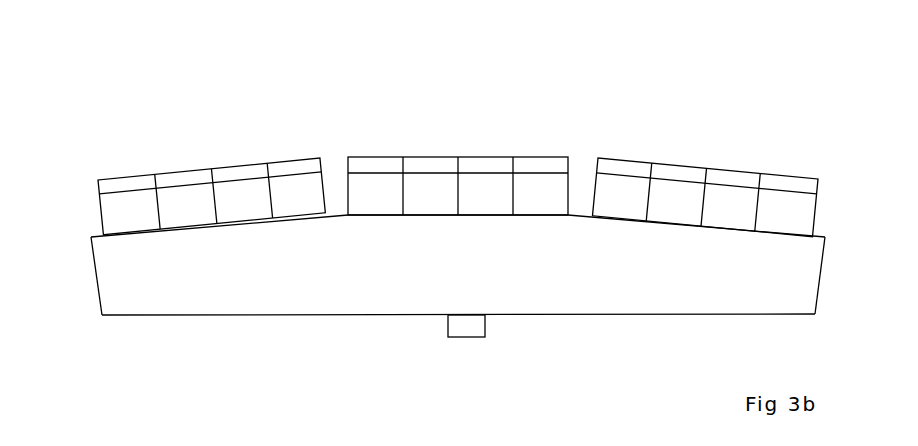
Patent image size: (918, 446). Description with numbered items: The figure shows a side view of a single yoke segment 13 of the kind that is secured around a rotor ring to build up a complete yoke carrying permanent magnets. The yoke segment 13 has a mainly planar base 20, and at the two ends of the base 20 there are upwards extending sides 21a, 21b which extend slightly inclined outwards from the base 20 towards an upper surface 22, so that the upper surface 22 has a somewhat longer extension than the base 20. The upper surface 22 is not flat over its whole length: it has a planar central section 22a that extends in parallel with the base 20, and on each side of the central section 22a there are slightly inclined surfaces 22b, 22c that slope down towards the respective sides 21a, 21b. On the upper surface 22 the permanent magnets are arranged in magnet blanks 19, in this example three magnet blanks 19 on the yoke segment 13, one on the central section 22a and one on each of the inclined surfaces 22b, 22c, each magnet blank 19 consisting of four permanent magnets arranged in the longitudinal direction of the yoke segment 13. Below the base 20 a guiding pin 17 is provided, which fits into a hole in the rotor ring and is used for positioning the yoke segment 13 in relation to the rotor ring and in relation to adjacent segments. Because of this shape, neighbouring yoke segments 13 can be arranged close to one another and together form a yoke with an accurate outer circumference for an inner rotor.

The yoke segment 13 is at (126, 119).
The guiding pin 17 is at (470, 328).
The magnet blank 19 is at (216, 155).
The base 20 is at (443, 317).
The side 21a is at (112, 272).
The side 21b is at (800, 265).
The upper surface 22 is at (580, 199).
The central section 22a is at (450, 217).
The inclined surface 22b is at (210, 228).
The inclined surface 22c is at (713, 228).